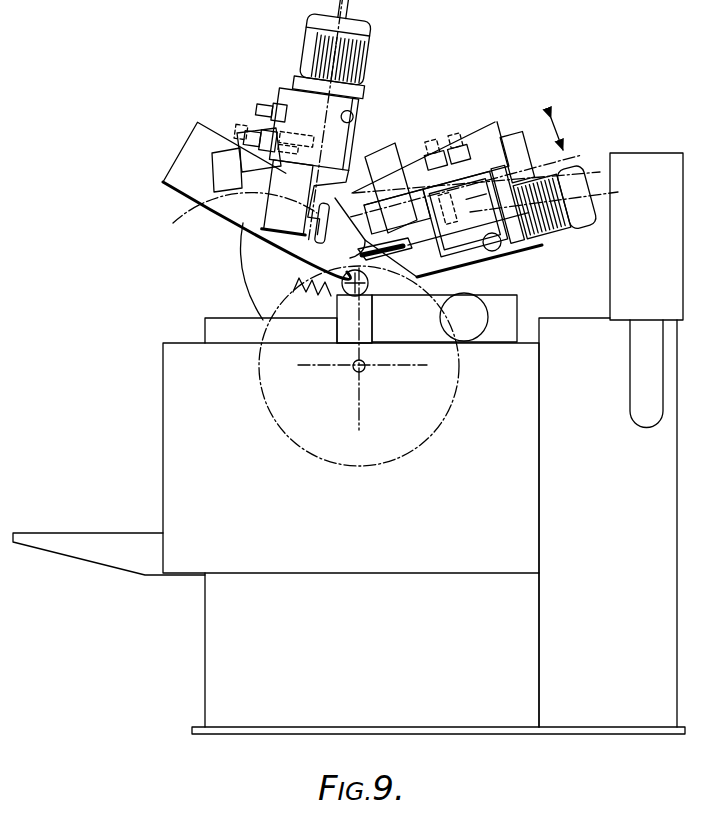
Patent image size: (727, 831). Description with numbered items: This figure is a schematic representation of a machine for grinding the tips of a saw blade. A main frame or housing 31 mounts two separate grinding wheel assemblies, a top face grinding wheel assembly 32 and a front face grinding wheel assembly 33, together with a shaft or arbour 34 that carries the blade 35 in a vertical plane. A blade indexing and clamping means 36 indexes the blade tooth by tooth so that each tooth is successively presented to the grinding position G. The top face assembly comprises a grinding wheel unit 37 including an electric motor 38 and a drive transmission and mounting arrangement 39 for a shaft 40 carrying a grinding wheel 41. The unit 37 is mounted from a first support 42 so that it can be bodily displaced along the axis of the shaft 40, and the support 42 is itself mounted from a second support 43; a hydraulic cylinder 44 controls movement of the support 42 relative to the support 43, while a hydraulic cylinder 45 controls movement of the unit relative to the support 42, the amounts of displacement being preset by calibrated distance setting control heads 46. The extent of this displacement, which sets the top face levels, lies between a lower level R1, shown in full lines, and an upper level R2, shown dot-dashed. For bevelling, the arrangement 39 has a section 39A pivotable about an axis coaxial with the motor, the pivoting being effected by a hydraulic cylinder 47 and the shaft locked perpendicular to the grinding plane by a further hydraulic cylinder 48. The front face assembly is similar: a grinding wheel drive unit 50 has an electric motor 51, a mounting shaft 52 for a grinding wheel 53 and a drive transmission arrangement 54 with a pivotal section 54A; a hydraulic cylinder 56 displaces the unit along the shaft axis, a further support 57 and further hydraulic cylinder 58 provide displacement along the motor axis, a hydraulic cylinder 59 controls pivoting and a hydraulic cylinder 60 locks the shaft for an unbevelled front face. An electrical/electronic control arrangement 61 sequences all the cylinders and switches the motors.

The main frame or housing 31 is at (374, 660).
The top face grinding wheel assembly 32 is at (584, 98).
The front face grinding wheel assembly 33 is at (230, 77).
The shaft or arbour 34 is at (365, 370).
The blade 35 is at (273, 418).
The blade indexing and clamping means 36 is at (364, 298).
The grinding wheel unit 37 is at (527, 251).
The electric motor 38 is at (572, 224).
The drive transmission and mounting arrangement 39 is at (465, 213).
The pivotable section 39A is at (390, 223).
The shaft 40 is at (386, 268).
The grinding wheel 41 is at (409, 252).
The first support 42 is at (483, 125).
The second support 43 is at (470, 262).
The hydraulic cylinder 44 is at (513, 135).
The hydraulic cylinder 45 is at (355, 196).
The calibrated distance setting control heads 46 is at (455, 150).
The hydraulic cylinder 47 is at (492, 252).
The hydraulic cylinder 48 is at (434, 150).
The grinding wheel drive unit 50 is at (294, 84).
The electric motor 51 is at (312, 40).
The mounting shaft 52 is at (303, 252).
The grinding wheel 53 is at (308, 268).
The drive transmission arrangement 54 is at (305, 108).
The pivotally mounted section 54A is at (267, 204).
The hydraulic cylinder 56 is at (222, 206).
The further support 57 is at (192, 143).
The further hydraulic cylinder 58 is at (199, 180).
The hydraulic cylinder 59 is at (353, 118).
The hydraulic cylinder 60 is at (256, 119).
The electrical/electronic control arrangement 61 is at (660, 248).
The grinding position G is at (366, 296).
The lower limit level R1 is at (618, 193).
The upper limit level R2 is at (600, 172).